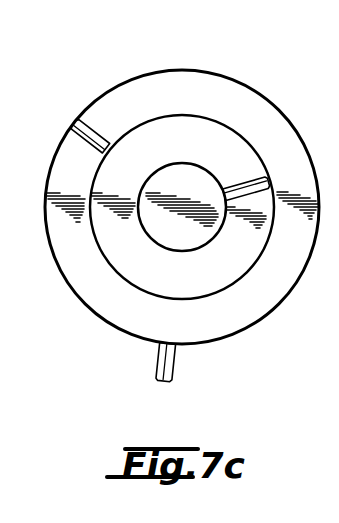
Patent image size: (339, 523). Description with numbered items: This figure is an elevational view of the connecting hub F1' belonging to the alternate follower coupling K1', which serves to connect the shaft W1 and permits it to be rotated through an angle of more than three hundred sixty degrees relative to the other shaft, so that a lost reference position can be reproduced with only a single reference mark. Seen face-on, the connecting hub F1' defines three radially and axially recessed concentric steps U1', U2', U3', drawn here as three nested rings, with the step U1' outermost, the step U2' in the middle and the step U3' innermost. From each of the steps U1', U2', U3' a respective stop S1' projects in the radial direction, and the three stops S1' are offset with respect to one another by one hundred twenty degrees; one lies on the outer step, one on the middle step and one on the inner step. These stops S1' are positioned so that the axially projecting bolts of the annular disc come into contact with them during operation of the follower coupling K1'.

The follower coupling K1' is at (27, 24).
The connecting hub F1' is at (192, 208).
The step U1' is at (192, 207).
The step U2' is at (193, 237).
The step U3' is at (193, 270).
The stop S1' is at (198, 247).